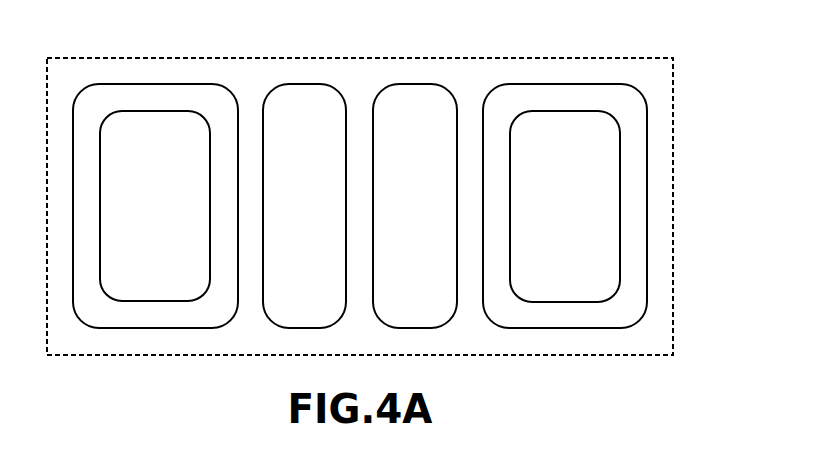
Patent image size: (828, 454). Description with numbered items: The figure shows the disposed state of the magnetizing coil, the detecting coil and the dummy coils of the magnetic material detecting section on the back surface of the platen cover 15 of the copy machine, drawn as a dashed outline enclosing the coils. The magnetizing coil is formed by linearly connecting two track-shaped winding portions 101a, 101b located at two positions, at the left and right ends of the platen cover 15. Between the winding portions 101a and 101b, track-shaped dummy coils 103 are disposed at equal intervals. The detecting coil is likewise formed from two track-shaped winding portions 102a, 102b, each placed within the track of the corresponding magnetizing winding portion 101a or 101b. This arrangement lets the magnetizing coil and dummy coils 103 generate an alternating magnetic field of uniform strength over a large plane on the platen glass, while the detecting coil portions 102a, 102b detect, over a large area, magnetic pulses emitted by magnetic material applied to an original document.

The platen cover 15 is at (673, 193).
The winding portion 101a is at (155, 84).
The winding portion 101b is at (565, 84).
The winding portion 102a is at (140, 111).
The winding portion 102b is at (565, 111).
The dummy coil 103 is at (302, 84).